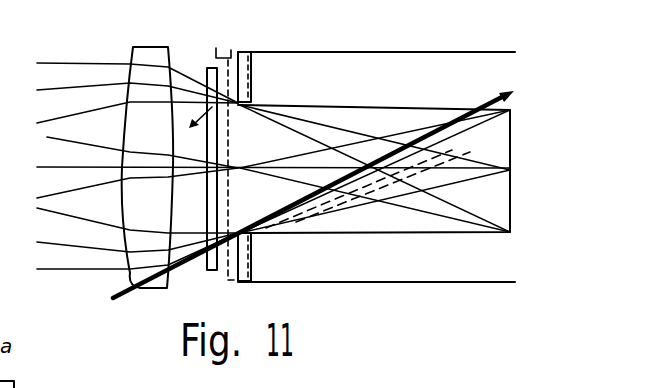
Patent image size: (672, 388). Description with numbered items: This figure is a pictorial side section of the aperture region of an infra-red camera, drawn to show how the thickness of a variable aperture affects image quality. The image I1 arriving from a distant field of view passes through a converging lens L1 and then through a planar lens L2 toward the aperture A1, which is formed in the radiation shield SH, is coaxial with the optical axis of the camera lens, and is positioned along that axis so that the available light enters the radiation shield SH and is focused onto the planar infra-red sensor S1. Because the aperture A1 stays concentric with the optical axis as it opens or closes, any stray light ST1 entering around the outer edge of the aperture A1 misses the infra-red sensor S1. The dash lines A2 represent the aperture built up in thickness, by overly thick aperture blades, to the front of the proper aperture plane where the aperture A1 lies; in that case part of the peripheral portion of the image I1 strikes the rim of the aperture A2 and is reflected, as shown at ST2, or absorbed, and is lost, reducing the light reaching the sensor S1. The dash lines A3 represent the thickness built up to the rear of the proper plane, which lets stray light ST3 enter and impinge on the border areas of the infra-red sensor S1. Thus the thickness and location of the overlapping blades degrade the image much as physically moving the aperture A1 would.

The converging lens L1 is at (145, 46).
The planar lens L2 is at (207, 70).
The aperture A1 is at (240, 102).
The aperture built up to the front A2 is at (219, 151).
The aperture built up to the rear A3 is at (252, 96).
The radiation shield SH is at (412, 52).
The planar infra-red sensor S1 is at (488, 140).
The stray light ST1 is at (486, 102).
The reflected light ST2 is at (222, 122).
The stray light ST3 is at (468, 142).
The image I1 is at (44, 136).